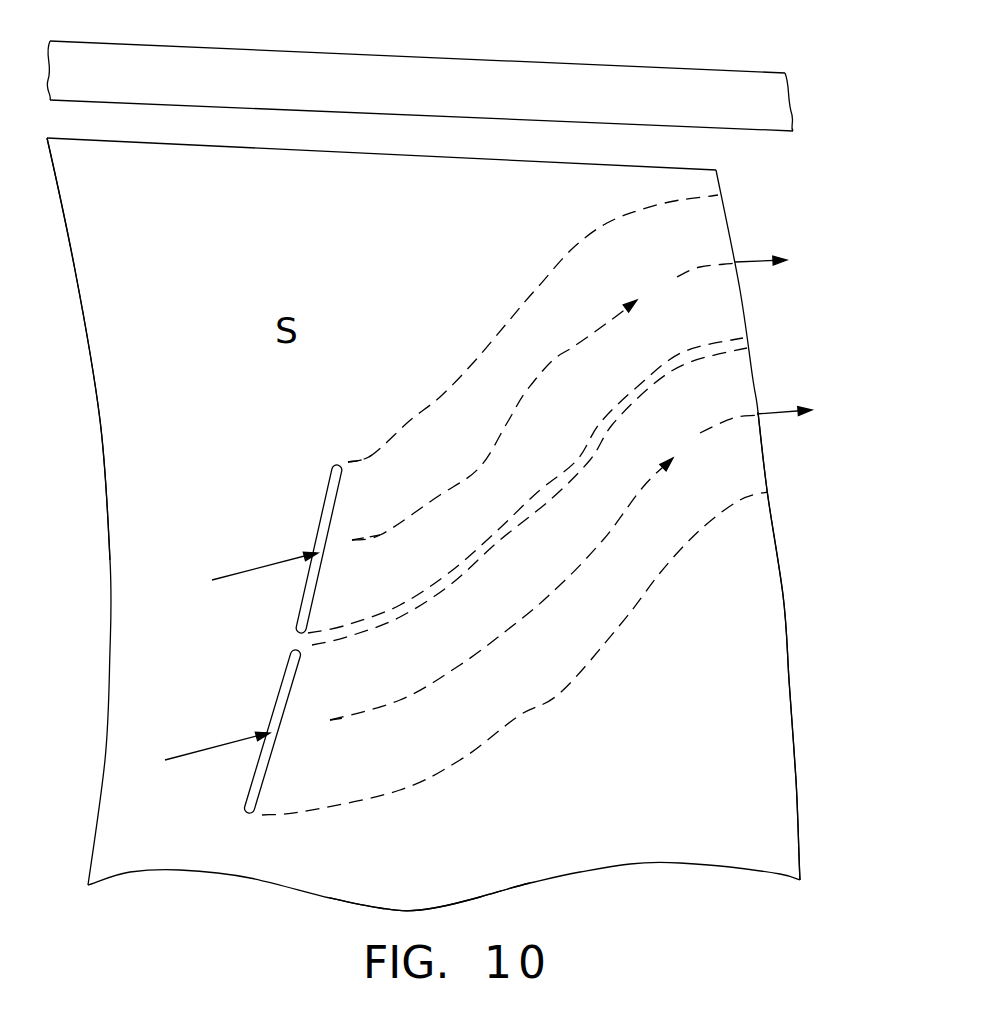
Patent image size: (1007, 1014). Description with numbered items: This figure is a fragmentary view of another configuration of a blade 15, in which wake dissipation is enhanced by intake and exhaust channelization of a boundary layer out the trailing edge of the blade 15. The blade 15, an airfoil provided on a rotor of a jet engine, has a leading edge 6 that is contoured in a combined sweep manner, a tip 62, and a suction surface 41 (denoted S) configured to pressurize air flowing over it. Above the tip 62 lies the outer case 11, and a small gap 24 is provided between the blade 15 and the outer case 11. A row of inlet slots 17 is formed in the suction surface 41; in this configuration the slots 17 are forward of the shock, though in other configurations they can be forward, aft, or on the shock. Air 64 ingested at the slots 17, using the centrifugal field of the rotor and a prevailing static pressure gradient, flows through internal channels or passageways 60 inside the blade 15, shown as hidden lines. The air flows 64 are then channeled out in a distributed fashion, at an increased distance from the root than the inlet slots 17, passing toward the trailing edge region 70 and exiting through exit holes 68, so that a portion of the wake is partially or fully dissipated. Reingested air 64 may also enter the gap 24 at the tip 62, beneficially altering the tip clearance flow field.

The outer case 11 is at (308, 51).
The tip 62 is at (225, 148).
The gap 24 is at (712, 150).
The leading edge 6 is at (108, 717).
The suction surface 41 is at (143, 470).
The trailing edge of panel 70 is at (782, 595).
The blade 15 is at (378, 870).
The slots 17 is at (303, 610).
The internal channels or passageways 60 is at (372, 490).
The exit holes 68 is at (742, 310).
The air 64 is at (748, 258).